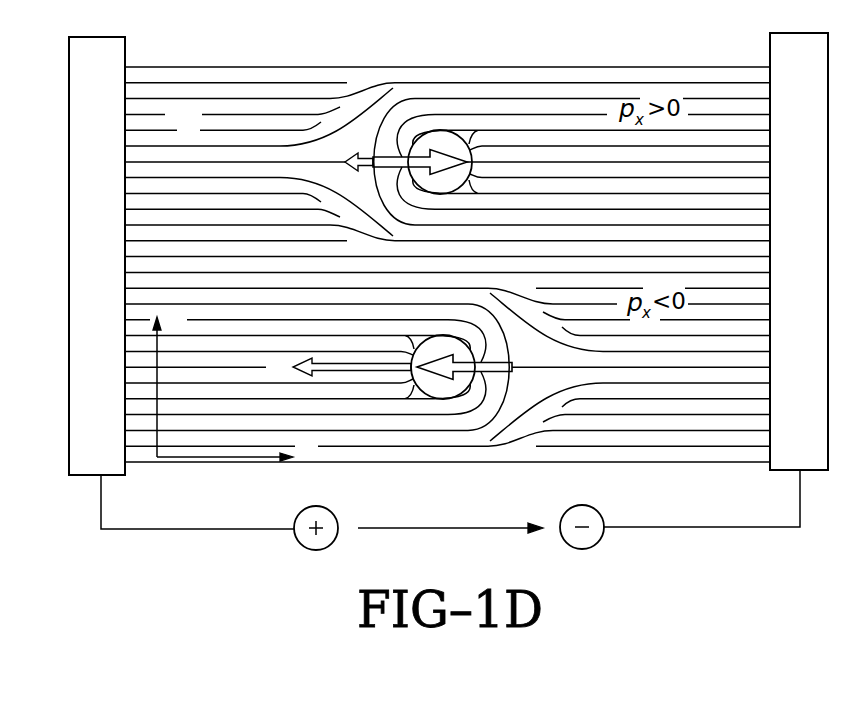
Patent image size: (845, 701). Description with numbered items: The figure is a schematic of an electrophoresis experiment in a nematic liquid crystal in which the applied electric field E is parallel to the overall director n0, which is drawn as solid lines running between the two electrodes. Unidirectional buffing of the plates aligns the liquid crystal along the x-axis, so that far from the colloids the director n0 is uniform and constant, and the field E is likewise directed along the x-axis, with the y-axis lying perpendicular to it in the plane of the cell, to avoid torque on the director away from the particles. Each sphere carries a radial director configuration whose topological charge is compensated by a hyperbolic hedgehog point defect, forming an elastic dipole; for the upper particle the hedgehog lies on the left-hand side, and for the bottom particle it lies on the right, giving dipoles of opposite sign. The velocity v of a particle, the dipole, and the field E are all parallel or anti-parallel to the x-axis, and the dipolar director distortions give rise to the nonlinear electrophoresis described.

The electric field E is at (450, 513).
The velocity v is at (340, 368).
The x-axis x is at (233, 449).
The y-axis y is at (167, 384).
The overall director n0 is at (182, 110).